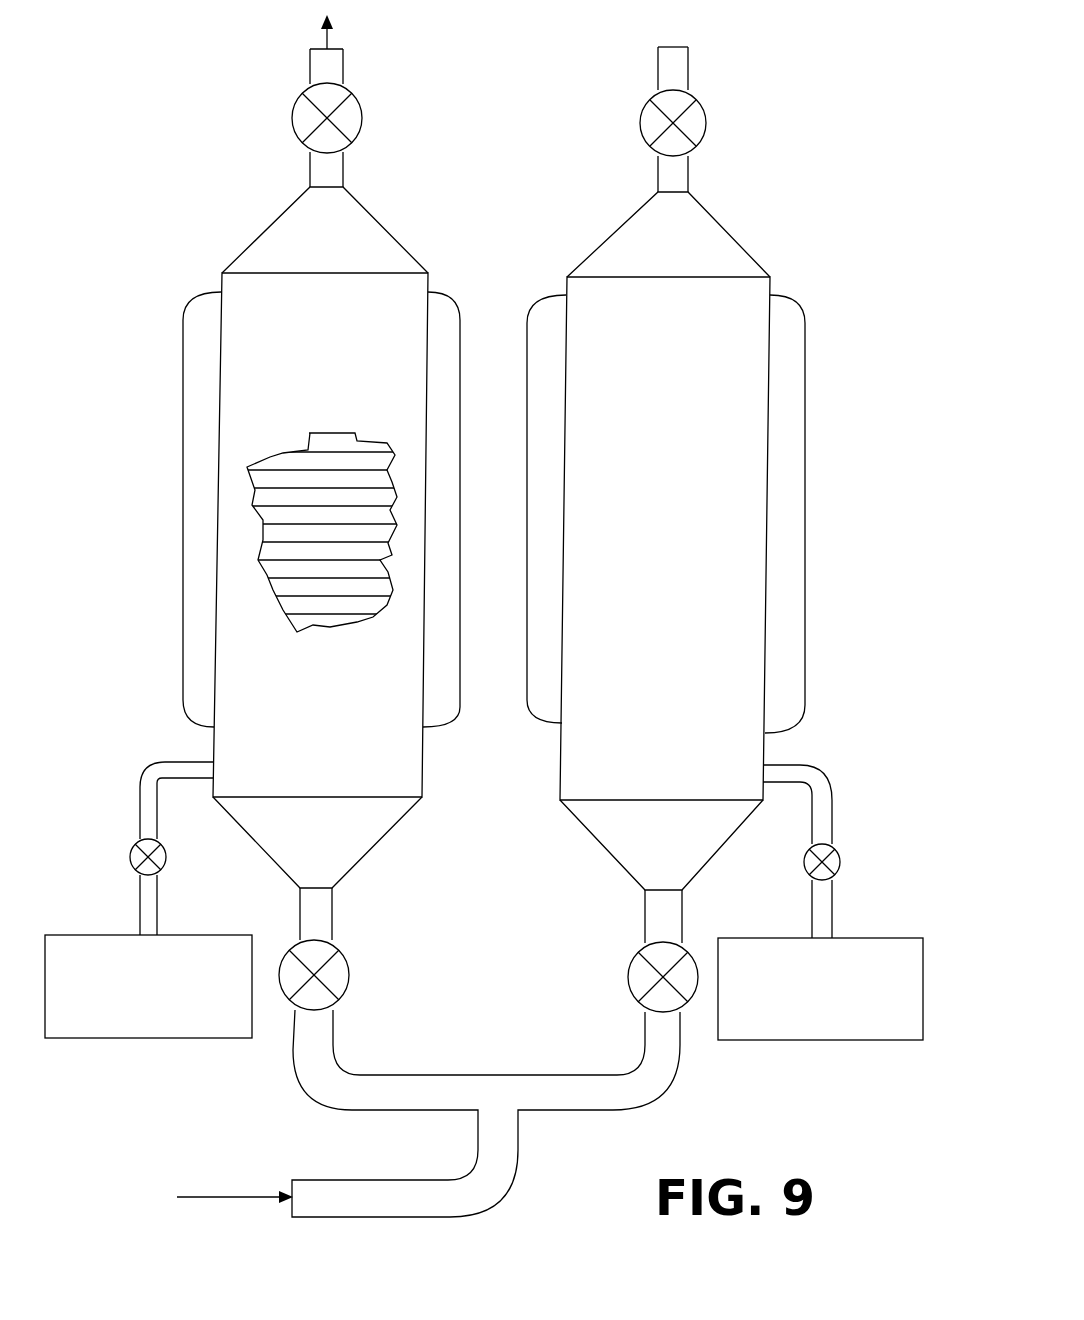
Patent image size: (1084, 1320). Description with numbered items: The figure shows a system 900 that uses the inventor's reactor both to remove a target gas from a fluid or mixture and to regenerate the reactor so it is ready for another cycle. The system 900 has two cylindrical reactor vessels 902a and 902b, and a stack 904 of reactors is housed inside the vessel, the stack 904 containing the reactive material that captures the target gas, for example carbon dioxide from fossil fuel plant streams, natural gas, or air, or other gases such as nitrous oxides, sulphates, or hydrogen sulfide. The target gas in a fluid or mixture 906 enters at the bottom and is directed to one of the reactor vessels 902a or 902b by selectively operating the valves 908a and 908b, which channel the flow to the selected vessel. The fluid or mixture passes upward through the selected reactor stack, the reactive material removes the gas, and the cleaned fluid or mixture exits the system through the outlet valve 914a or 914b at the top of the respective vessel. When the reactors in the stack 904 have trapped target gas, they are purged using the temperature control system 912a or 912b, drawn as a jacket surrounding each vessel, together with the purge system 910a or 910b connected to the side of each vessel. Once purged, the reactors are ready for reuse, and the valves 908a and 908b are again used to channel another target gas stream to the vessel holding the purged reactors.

The system 900 is at (172, 101).
The cylindrical reactor vessel 902a is at (370, 333).
The cylindrical reactor vessel 902b is at (717, 350).
The stack of reactors 904 is at (328, 497).
The target gas in a fluid or mixture 906 is at (217, 1195).
The valve 908a is at (348, 968).
The valve 908b is at (637, 1002).
The purge system 910a is at (197, 1000).
The purge system 910b is at (868, 1009).
The temperature control system 912a is at (185, 523).
The temperature control system 912b is at (805, 433).
The valve 914a is at (363, 118).
The valve 914b is at (706, 125).